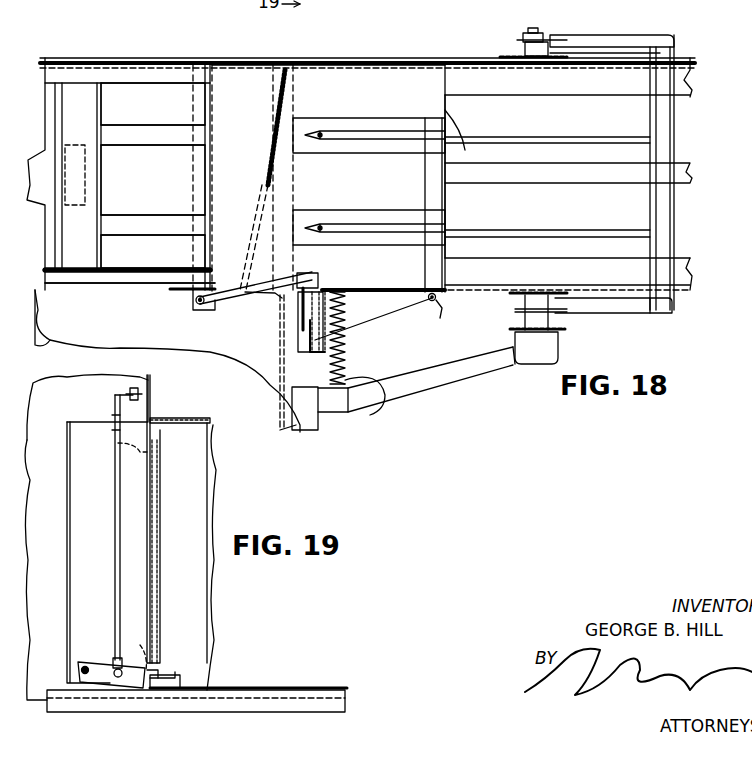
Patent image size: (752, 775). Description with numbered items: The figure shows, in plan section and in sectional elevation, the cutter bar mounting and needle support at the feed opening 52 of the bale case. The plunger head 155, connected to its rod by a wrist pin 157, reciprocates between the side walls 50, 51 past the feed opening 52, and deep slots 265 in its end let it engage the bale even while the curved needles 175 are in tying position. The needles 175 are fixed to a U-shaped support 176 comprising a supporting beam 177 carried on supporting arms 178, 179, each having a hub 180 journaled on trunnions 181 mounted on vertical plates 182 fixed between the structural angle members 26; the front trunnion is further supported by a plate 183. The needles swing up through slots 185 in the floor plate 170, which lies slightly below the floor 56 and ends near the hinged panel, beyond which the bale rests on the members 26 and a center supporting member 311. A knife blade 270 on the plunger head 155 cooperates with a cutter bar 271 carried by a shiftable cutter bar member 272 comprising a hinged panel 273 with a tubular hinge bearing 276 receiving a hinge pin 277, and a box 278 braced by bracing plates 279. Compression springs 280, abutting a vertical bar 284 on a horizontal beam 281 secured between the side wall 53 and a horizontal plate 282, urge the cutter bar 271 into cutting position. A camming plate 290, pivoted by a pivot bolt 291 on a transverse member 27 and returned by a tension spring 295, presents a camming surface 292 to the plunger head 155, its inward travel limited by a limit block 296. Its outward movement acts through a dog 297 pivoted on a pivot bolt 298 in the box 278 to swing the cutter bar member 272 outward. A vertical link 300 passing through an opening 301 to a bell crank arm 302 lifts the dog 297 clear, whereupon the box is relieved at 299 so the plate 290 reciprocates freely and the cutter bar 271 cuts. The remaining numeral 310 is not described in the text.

In FIG. 18, the side wall 51 is at (414, 62).
In FIG. 18, the plunger head 155 is at (196, 156).
In FIG. 19, the plunger head 155 is at (192, 483).
In FIG. 18, the wrist pin 157 is at (74, 145).
In FIG. 18, the slots 265 is at (140, 142).
In FIG. 18, the bottom plate 310 is at (112, 282).
In FIG. 18, the knife blade 270 is at (195, 268).
In FIG. 19, the knife blade 270 is at (156, 474).
In FIG. 18, the feed opening 52 is at (172, 294).
In FIG. 18, the pivot bolt 291 is at (196, 305).
In FIG. 18, the camming plate 290 is at (246, 303).
In FIG. 19, the camming plate 290 is at (172, 672).
In FIG. 18, the floor 56 is at (203, 350).
In FIG. 18, the transverse bale case member 27 is at (294, 195).
In FIG. 19, the transverse bale case member 27 is at (345, 700).
In FIG. 18, the tension spring 295 is at (262, 148).
In FIG. 18, the camming surface 292 is at (252, 273).
In FIG. 18, the limit block 296 is at (270, 283).
In FIG. 19, the limit block 296 is at (125, 686).
In FIG. 18, the curved needles 175 is at (332, 134).
In FIG. 18, the floor plate 170 is at (450, 175).
In FIG. 19, the floor plate 170 is at (264, 688).
In FIG. 18, the slots 185 is at (405, 215).
In FIG. 18, the U-shaped support 176 is at (682, 43).
In FIG. 18, the supporting beam 177 is at (664, 150).
In FIG. 18, the supporting arm 179 is at (615, 42).
In FIG. 18, the center supporting member 311 is at (540, 176).
In FIG. 18, the trunnions 181 is at (530, 30).
In FIG. 18, the hub 180 is at (543, 42).
In FIG. 18, the vertical plates 182 is at (514, 56).
In FIG. 18, the plate 183 is at (566, 330).
In FIG. 18, the supporting arm 178 is at (647, 308).
In FIG. 18, the side wall 50 is at (466, 285).
In FIG. 18, the structural angle members 26 is at (486, 70).
In FIG. 19, the structural angle members 26 is at (172, 417).
In FIG. 18, the hinged panel 273 is at (374, 288).
In FIG. 19, the hinged panel 273 is at (146, 534).
In FIG. 18, the cutter bar 271 is at (310, 270).
In FIG. 19, the cutter bar 271 is at (112, 443).
In FIG. 18, the vertical link 300 is at (325, 272).
In FIG. 19, the vertical link 300 is at (114, 398).
In FIG. 18, the cutter bar member 272 is at (328, 290).
In FIG. 19, the cutter bar member 272 is at (158, 500).
In FIG. 18, the box 278 is at (300, 346).
In FIG. 19, the box 278 is at (64, 484).
In FIG. 18, the dog 297 is at (318, 342).
In FIG. 19, the dog 297 is at (96, 688).
In FIG. 18, the pivot bolt 298 is at (378, 332).
In FIG. 19, the pivot bolt 298 is at (86, 666).
In FIG. 18, the bracing plates 279 is at (372, 326).
In FIG. 18, the tubular hinge bearing 276 is at (430, 302).
In FIG. 18, the hinge pin 277 is at (442, 318).
In FIG. 18, the vertical bar 284 is at (352, 400).
In FIG. 18, the horizontal beam 281 is at (440, 378).
In FIG. 18, the compression springs 280 is at (377, 397).
In FIG. 18, the horizontal plate 282 is at (528, 355).
In FIG. 18, the side wall 53 is at (282, 380).
In FIG. 19, the side wall 53 is at (52, 392).
In FIG. 19, the arm 302 is at (128, 388).
In FIG. 19, the opening 301 is at (112, 416).
In FIG. 19, the relieved portion 299 is at (158, 648).